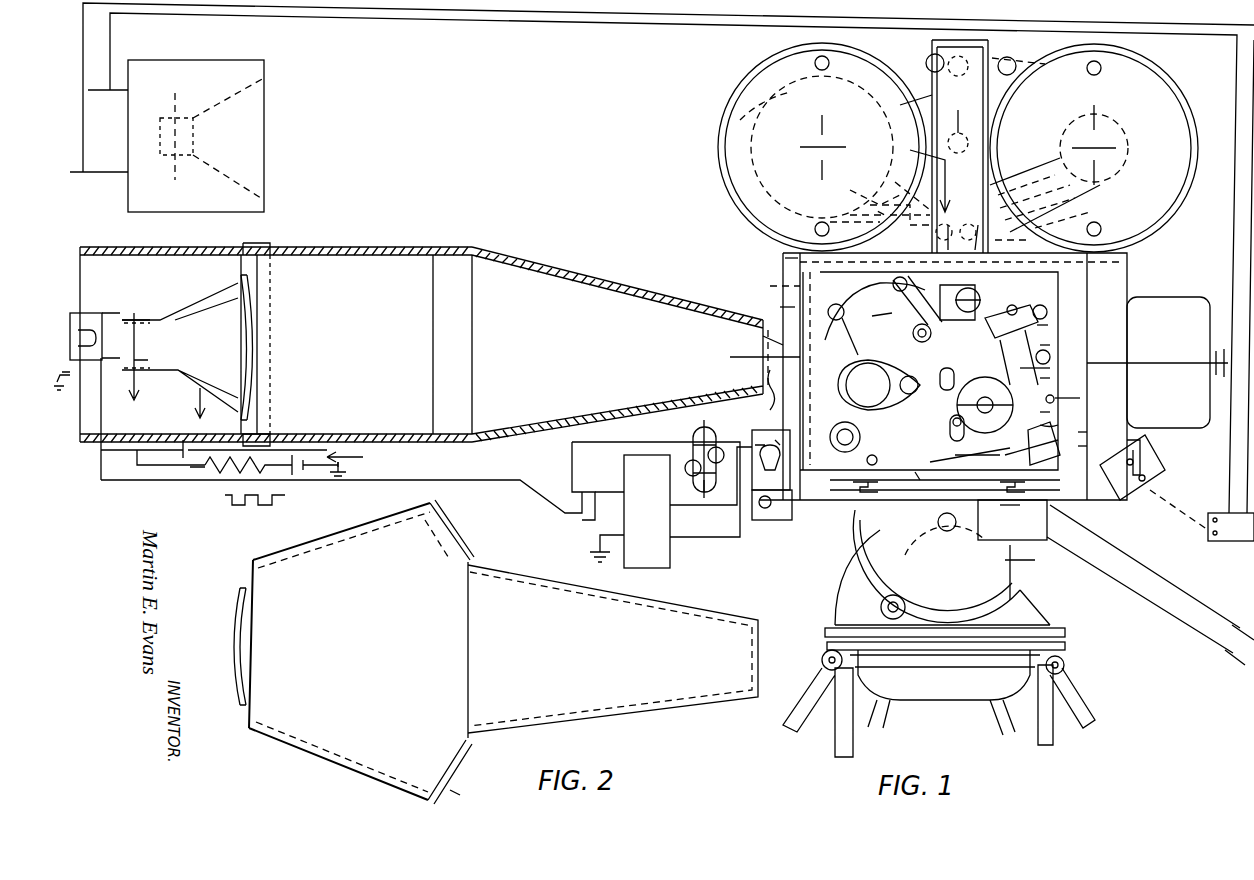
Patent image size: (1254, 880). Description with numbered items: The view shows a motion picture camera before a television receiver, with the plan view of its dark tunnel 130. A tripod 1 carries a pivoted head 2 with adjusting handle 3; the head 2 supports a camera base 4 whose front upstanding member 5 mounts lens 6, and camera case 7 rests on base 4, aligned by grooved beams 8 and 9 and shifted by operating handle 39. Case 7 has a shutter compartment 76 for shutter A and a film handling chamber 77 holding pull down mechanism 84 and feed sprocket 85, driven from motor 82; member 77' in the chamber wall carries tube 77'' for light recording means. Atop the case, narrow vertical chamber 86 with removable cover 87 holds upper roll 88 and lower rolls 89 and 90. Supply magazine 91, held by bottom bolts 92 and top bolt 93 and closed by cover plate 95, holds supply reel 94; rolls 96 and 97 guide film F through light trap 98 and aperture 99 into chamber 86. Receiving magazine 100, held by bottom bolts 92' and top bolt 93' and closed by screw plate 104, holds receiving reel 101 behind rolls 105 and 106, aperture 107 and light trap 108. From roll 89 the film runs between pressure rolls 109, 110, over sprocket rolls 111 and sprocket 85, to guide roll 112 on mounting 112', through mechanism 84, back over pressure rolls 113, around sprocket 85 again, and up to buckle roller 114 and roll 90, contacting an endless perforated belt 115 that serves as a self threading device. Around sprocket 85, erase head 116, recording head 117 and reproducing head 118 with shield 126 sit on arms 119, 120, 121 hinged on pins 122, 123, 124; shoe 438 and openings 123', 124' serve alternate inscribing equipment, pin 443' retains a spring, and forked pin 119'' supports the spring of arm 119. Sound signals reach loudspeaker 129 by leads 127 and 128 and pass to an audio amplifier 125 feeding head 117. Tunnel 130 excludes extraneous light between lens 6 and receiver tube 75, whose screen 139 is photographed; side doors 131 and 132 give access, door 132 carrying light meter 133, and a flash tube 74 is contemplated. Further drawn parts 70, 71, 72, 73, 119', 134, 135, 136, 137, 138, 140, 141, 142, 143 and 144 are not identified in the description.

In FIG. 1, the tripod 1 is at (1080, 684).
In FIG. 1, the pivoted head 2 is at (1025, 560).
In FIG. 1, the adjusting handle 3 is at (1100, 565).
In FIG. 1, the camera base 4 is at (808, 508).
In FIG. 1, the front upstanding member 5 is at (780, 307).
In FIG. 1, the lens 6 is at (780, 380).
In FIG. 1, the camera case 7 is at (925, 497).
In FIG. 1, the grooved beam 8 is at (840, 508).
In FIG. 1, the grooved beam 9 is at (1010, 492).
In FIG. 1, the operating handle 39 is at (1142, 455).
In FIG. 1, the socket 70 is at (775, 484).
In FIG. 1, the plug 71 is at (756, 428).
In FIG. 1, the amplifier 72 is at (660, 556).
In FIG. 1, the wiring 73 is at (580, 512).
In FIG. 1, the flash tube 74 is at (696, 440).
In FIG. 1, the tube 75 is at (200, 325).
In FIG. 2, the tube 75 is at (232, 618).
In FIG. 1, the front end shutter compartment 76 is at (842, 425).
In FIG. 1, the film handling chamber 77 is at (770, 263).
In FIG. 1, the member 77' is at (1095, 431).
In FIG. 1, the tube 77'' is at (1097, 445).
In FIG. 1, the motor 82 is at (1150, 305).
In FIG. 1, the film pull down mechanism 84 is at (866, 363).
In FIG. 1, the film feed sprocket 85 is at (1059, 425).
In FIG. 1, the narrow vertical chamber 86 is at (940, 72).
In FIG. 1, the removable cover 87 is at (906, 100).
In FIG. 1, the upper roll 88 is at (956, 128).
In FIG. 1, the lower roll 89 is at (1025, 168).
In FIG. 1, the lower roll 90 is at (1026, 175).
In FIG. 1, the film supply magazine 91 is at (720, 150).
In FIG. 1, the bottom bolts 92 is at (875, 311).
In FIG. 1, the bottom bolts 92' is at (995, 302).
In FIG. 1, the top bolt 93 is at (823, 143).
In FIG. 1, the top bolt 93' is at (1033, 73).
In FIG. 1, the film supply reel 94 is at (718, 122).
In FIG. 1, the cover plate 95 is at (735, 160).
In FIG. 1, the roll 96 is at (880, 204).
In FIG. 1, the roll 97 is at (872, 185).
In FIG. 1, the light trap 98 is at (911, 186).
In FIG. 1, the aperture 99 is at (960, 146).
In FIG. 1, the film receiving magazine 100 is at (1172, 82).
In FIG. 1, the film receiving reel 101 is at (1125, 140).
In FIG. 1, the screw plate 104 is at (1160, 108).
In FIG. 1, the roll 105 is at (1040, 203).
In FIG. 1, the roll 106 is at (1055, 208).
In FIG. 1, the aperture 107 is at (1035, 189).
In FIG. 1, the light trap 108 is at (1042, 226).
In FIG. 1, the pressure roll 109 is at (915, 335).
In FIG. 1, the pressure roll 110 is at (924, 340).
In FIG. 1, the sprocket rolls 111 is at (942, 376).
In FIG. 1, the guide roll 112 is at (864, 335).
In FIG. 1, the mounting 112' is at (864, 457).
In FIG. 1, the pressure rolls 113 is at (950, 428).
In FIG. 1, the buckle roller 114 is at (1000, 352).
In FIG. 1, the endless belt 115 is at (921, 176).
In FIG. 1, the magnetic head 116 is at (985, 466).
In FIG. 1, the recording head 117 is at (1052, 440).
In FIG. 1, the head 118 is at (1067, 393).
In FIG. 1, the arm 119 is at (934, 481).
In FIG. 1, the lever 119' is at (1046, 457).
In FIG. 1, the forked pin 119'' is at (1035, 487).
In FIG. 1, the arm 120 is at (1064, 410).
In FIG. 1, the arm 121 is at (1048, 330).
In FIG. 1, the pin 122 is at (885, 470).
In FIG. 1, the pin 123 is at (1062, 355).
In FIG. 1, the opening 123' is at (1053, 367).
In FIG. 1, the pin 124 is at (1060, 311).
In FIG. 1, the opening 124' is at (1063, 344).
In FIG. 1, the audio amplifier 125 is at (1225, 543).
In FIG. 1, the shield 126 is at (1050, 379).
In FIG. 1, the lead 127 is at (95, 176).
In FIG. 1, the lead 128 is at (102, 96).
In FIG. 1, the loudspeaker 129 is at (240, 118).
In FIG. 1, the dark tunnel 130 is at (395, 272).
In FIG. 2, the dark tunnel 130 is at (470, 740).
In FIG. 2, the side door 131 is at (470, 806).
In FIG. 1, the side door 132 is at (478, 248).
In FIG. 2, the side door 132 is at (470, 540).
In FIG. 2, the light meter 133 is at (450, 514).
In FIG. 1, the lead 134 is at (716, 480).
In FIG. 1, the connector 135 is at (105, 310).
In FIG. 1, the terminal 136 is at (122, 312).
In FIG. 1, the terminal 137 is at (132, 320).
In FIG. 1, the light path 138 is at (186, 392).
In FIG. 1, the television receiver cathode tube screen 139 is at (225, 298).
In FIG. 1, the battery 140 is at (305, 478).
In FIG. 1, the resistor 141 is at (225, 475).
In FIG. 1, the capacitor 142 is at (195, 438).
In FIG. 1, the wire 143 is at (400, 488).
In FIG. 1, the signal 144 is at (245, 508).
In FIG. 1, the shoe 438 is at (985, 405).
In FIG. 1, the pin 443' is at (1087, 396).
In FIG. 1, the shutter A is at (771, 291).
In FIG. 1, the film F is at (880, 313).